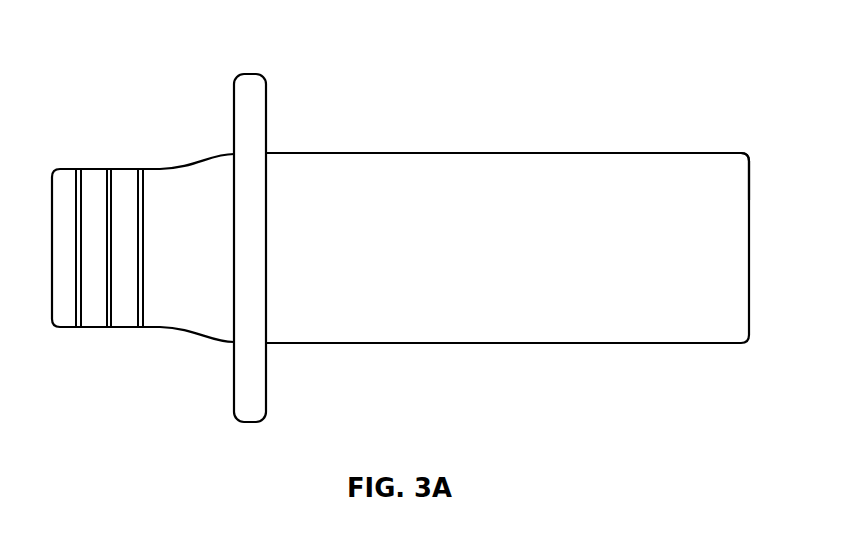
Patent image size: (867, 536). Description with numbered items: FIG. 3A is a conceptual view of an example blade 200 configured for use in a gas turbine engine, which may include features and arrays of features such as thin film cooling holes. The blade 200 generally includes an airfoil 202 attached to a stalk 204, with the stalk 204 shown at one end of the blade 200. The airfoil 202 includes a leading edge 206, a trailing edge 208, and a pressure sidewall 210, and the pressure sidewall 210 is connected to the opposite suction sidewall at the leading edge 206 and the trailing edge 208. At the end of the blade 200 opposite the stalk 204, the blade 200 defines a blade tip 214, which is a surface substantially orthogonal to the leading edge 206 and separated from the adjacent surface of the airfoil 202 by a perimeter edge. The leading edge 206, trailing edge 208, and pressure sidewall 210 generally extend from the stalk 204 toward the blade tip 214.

The blade 200 is at (114, 48).
The airfoil 202 is at (459, 334).
The stalk 204 is at (157, 328).
The leading edge 206 is at (363, 343).
The trailing edge 208 is at (424, 153).
The pressure sidewall 210 is at (512, 263).
The blade tip 214 is at (761, 170).